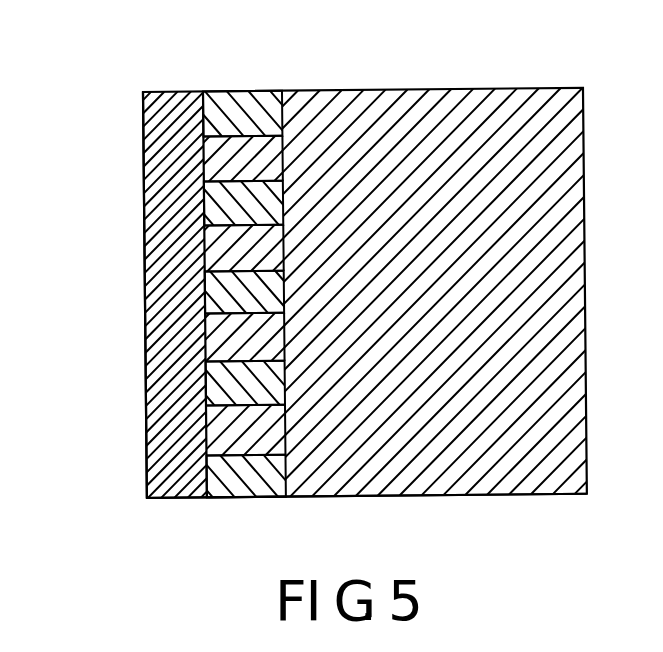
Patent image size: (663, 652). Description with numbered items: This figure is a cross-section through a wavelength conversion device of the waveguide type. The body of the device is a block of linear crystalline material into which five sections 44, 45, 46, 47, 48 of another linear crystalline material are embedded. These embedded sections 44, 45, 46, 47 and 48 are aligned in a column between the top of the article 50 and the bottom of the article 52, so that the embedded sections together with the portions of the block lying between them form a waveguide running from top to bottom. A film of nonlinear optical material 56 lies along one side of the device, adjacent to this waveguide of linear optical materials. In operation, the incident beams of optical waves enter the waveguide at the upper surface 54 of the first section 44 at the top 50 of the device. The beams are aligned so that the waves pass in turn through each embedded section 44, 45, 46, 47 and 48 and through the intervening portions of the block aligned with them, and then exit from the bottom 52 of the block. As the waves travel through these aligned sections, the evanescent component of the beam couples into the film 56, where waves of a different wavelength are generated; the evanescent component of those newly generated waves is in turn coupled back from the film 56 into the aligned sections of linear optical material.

The embedded section 44 is at (203, 117).
The embedded section 45 is at (203, 205).
The embedded section 46 is at (203, 296).
The embedded section 47 is at (203, 386).
The embedded section 48 is at (203, 476).
The top of the article 50 is at (465, 91).
The bottom of the article 52 is at (425, 499).
The upper surface of section 54 is at (188, 94).
The film of nonlinear optical material 56 is at (142, 115).